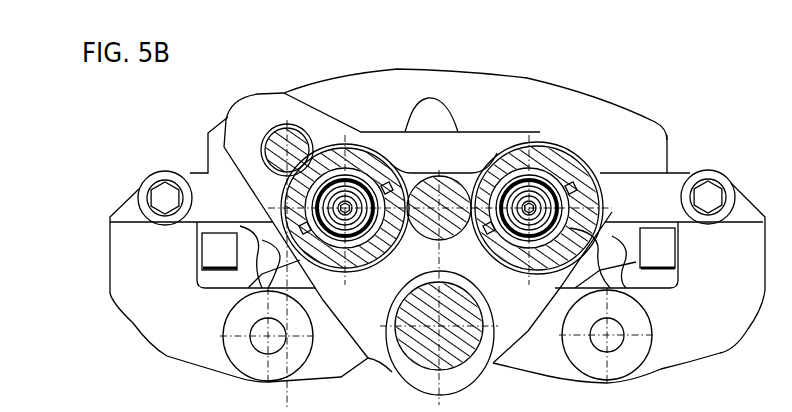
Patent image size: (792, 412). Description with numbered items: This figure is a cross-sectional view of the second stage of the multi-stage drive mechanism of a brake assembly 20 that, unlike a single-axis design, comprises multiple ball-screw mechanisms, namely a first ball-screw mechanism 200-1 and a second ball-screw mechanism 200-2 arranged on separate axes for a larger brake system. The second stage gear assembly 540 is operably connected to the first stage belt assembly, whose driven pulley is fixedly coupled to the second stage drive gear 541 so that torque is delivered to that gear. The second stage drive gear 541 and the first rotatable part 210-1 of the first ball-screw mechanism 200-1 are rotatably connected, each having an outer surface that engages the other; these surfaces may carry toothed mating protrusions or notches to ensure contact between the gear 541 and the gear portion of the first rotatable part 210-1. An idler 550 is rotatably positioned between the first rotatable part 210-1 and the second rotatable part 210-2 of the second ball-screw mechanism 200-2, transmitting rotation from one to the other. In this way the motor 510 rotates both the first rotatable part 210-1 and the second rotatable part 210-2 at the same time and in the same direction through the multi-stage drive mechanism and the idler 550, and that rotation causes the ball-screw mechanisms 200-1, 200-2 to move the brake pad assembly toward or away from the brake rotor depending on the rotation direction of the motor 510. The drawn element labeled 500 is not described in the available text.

The brake assembly 20 is at (97, 208).
The first ball-screw mechanism 200-1 is at (332, 140).
The second ball-screw mechanism 200-2 is at (547, 138).
The first rotatable part 210-1 is at (364, 168).
The second rotatable part 210-2 is at (514, 165).
The link assembly 500 is at (590, 156).
The motor 510 is at (453, 345).
The second stage gear assembly 540 is at (250, 153).
The second stage drive gear 541 is at (286, 122).
The idler 550 is at (447, 188).